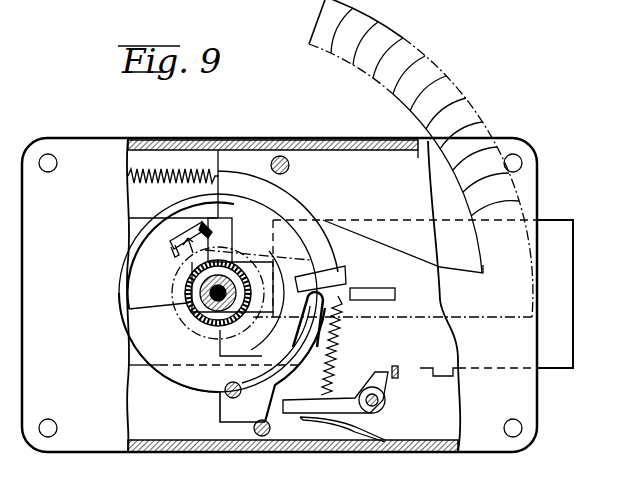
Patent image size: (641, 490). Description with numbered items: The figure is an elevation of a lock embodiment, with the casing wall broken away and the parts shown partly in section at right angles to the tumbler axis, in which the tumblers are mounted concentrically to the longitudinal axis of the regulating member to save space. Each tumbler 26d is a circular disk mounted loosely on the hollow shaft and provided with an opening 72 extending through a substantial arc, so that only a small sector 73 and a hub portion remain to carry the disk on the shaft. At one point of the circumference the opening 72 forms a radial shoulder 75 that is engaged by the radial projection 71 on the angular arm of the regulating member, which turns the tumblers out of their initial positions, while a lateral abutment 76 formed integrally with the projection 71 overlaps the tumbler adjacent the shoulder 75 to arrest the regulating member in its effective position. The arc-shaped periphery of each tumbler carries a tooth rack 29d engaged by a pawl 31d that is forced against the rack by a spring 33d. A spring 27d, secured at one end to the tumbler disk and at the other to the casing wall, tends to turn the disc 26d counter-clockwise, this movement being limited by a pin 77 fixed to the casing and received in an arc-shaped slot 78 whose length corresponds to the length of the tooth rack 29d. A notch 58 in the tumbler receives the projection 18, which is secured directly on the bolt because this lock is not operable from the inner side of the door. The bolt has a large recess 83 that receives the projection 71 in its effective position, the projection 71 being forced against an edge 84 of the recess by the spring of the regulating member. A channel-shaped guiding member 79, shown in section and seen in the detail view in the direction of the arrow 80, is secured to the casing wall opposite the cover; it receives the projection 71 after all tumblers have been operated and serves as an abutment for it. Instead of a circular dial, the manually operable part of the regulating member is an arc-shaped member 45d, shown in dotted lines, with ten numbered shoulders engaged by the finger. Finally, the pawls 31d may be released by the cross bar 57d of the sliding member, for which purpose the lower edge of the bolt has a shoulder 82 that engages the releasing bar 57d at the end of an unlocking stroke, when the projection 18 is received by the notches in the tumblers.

The spring 27d is at (163, 170).
The radial projection 71 is at (236, 240).
The radial shoulder 75 is at (224, 218).
The lateral abutment 76 is at (254, 236).
The edge of recess 84 is at (226, 220).
The tumbler 26d is at (290, 203).
The opening 72 is at (270, 238).
The notch 58 is at (333, 265).
The projection 18 is at (376, 288).
The arc-shaped member 45d is at (512, 212).
The arrow 80 is at (189, 246).
The channel-shaped guiding member 79 is at (180, 255).
The recess 83 is at (262, 285).
The sector 73 is at (222, 308).
The pin 77 is at (225, 392).
The arc-shaped slot 78 is at (262, 385).
The spring 33d is at (342, 430).
The tooth rack 29d is at (329, 345).
The pawl 31d is at (345, 402).
The cross bar 57d is at (408, 385).
The shoulder 82 is at (441, 378).